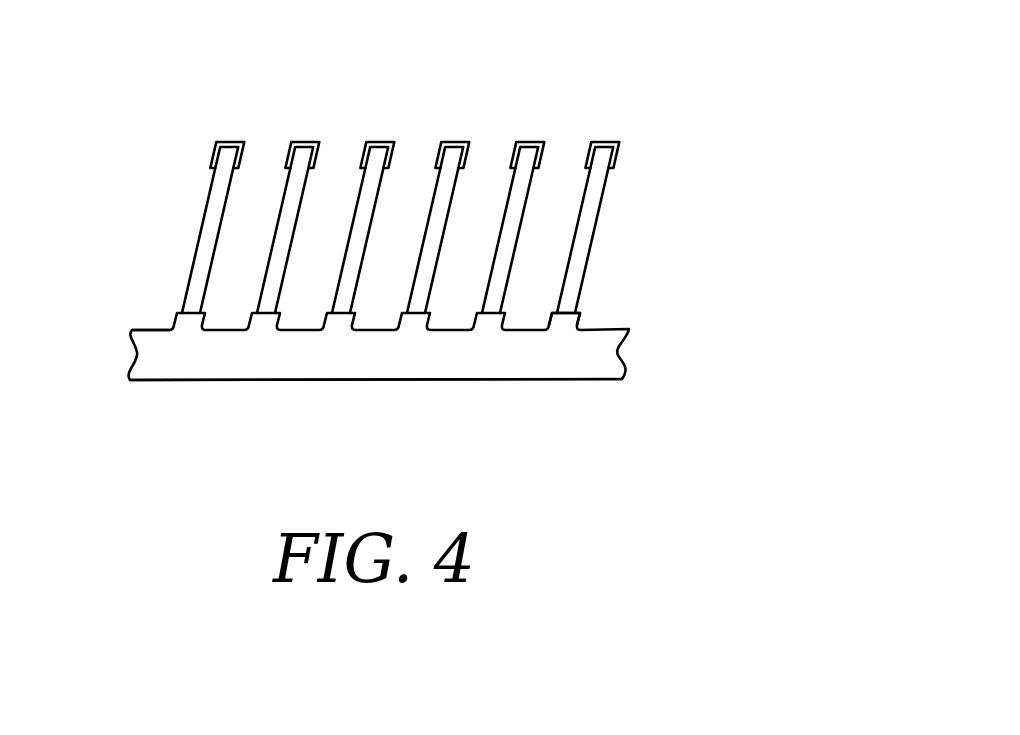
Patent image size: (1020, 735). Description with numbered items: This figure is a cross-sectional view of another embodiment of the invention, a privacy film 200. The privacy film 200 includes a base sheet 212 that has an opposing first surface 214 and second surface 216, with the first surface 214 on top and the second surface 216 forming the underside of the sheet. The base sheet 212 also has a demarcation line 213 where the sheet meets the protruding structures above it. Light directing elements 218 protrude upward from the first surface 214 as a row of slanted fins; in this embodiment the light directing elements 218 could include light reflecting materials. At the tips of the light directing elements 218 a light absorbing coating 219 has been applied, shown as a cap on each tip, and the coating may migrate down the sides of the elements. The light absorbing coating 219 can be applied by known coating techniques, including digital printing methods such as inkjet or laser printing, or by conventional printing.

The privacy film 200 is at (548, 67).
The base sheet 212 is at (600, 350).
The demarcation line 213 is at (576, 316).
The first surface 214 is at (158, 330).
The second surface 216 is at (570, 379).
The light directing elements 218 is at (603, 212).
The light absorbing coating 219 is at (604, 142).